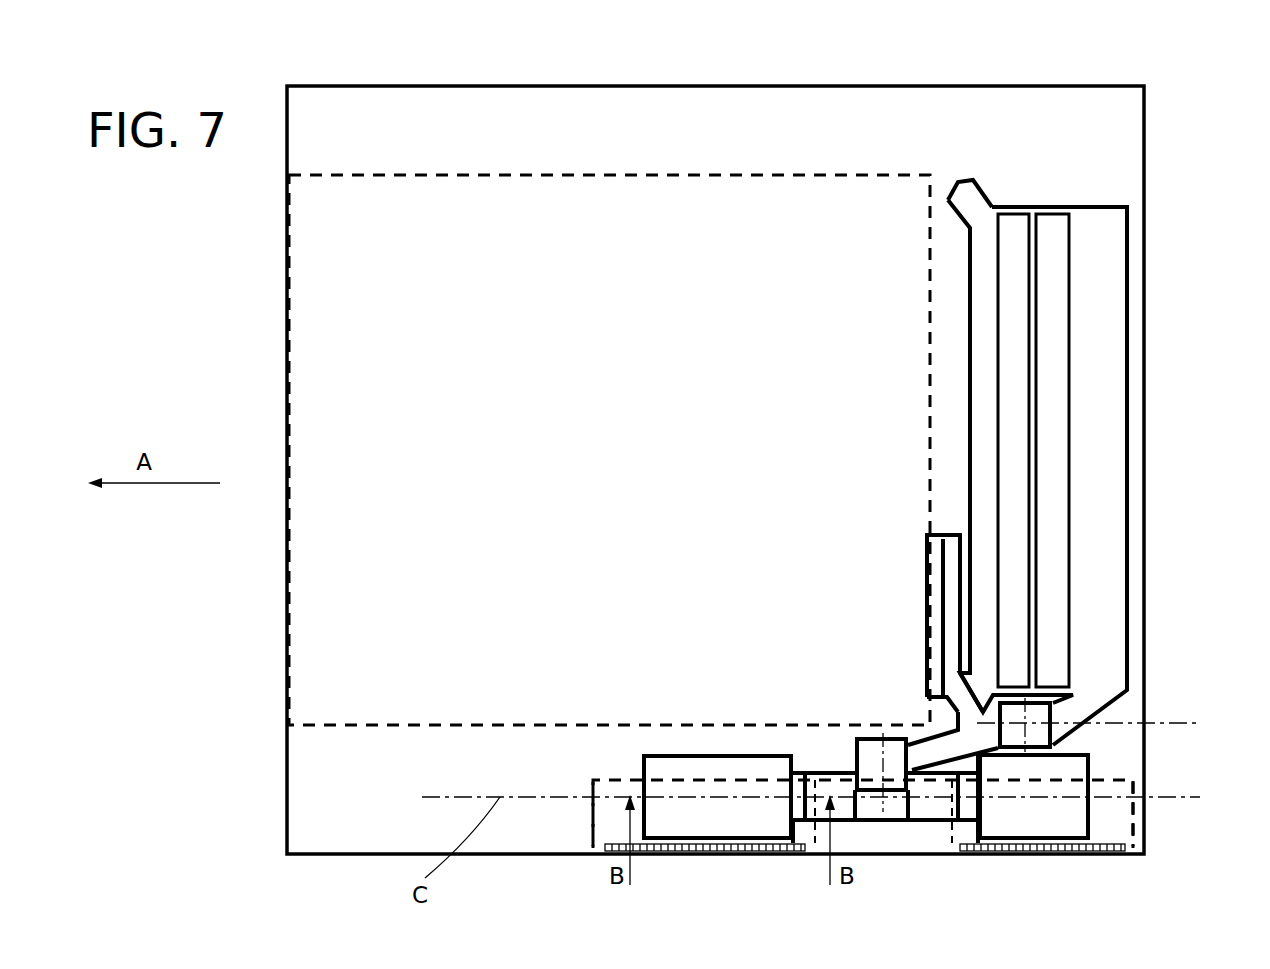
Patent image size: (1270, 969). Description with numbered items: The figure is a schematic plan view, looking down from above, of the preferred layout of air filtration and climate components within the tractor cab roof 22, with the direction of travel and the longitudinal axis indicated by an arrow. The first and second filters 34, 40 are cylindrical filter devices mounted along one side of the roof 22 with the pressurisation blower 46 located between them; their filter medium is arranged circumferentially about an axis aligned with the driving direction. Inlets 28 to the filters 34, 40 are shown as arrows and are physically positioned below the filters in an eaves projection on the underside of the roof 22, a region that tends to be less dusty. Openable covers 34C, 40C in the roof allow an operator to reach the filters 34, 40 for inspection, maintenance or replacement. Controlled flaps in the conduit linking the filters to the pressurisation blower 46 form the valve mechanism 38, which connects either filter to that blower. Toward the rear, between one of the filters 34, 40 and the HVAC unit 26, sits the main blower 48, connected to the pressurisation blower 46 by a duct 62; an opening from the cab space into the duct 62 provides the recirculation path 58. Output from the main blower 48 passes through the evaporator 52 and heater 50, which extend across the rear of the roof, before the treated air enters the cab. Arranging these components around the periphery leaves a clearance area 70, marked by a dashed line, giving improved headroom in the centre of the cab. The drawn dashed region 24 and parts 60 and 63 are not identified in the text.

The roof 22 is at (353, 85).
The moving unit 24 is at (816, 872).
The HVAC unit 26 is at (1080, 403).
The inlets 28 is at (724, 853).
The first filter 34 is at (1050, 825).
The openable cover 34C is at (1143, 830).
The valve mechanism 38 is at (852, 793).
The second filter 40 is at (663, 770).
The openable cover 40C is at (593, 803).
The pressurisation blower 46 is at (866, 758).
The main blower 48 is at (1042, 735).
The heater 50 is at (1008, 235).
The evaporator 52 is at (1050, 235).
The recirculation path 58 is at (942, 712).
The cover 60 is at (928, 612).
The duct 62 is at (976, 757).
The hook 63 is at (958, 185).
The clearance area 70 is at (515, 180).